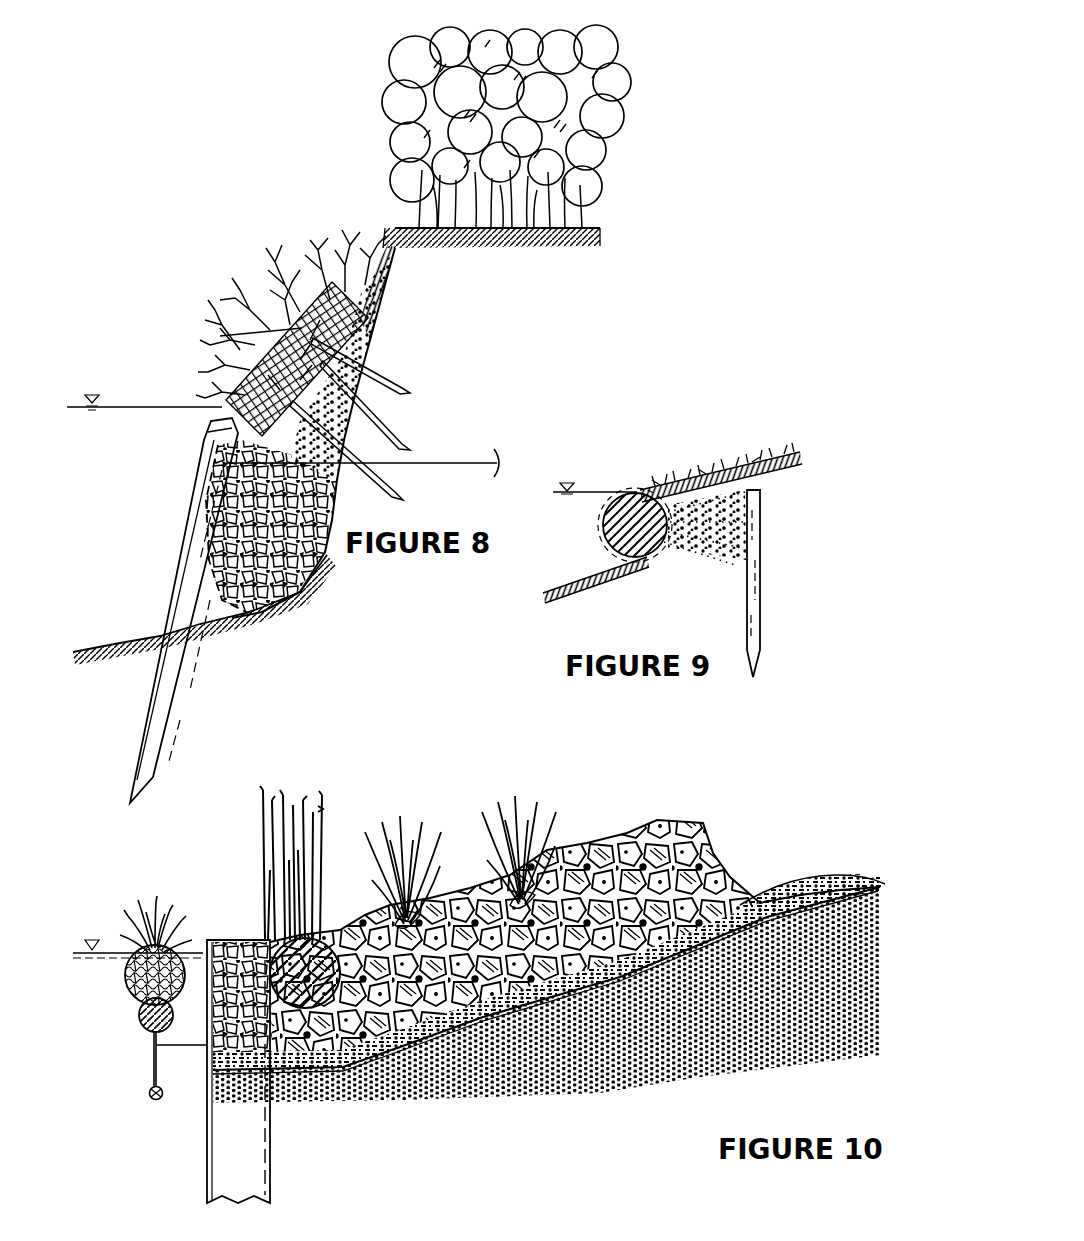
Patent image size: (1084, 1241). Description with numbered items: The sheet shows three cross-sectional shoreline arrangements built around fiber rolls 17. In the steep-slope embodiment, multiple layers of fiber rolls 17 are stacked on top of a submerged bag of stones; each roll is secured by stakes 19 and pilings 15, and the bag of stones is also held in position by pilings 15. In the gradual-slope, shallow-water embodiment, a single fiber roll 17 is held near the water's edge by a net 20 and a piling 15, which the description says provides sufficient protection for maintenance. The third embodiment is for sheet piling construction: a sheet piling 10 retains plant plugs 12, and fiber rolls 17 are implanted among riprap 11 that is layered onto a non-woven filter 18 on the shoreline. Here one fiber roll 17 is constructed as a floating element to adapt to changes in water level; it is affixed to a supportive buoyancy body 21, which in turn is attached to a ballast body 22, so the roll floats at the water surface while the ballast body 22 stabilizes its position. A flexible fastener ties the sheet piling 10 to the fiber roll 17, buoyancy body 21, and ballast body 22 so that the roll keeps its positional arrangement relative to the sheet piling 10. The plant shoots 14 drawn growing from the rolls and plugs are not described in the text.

In FIG. 10, the sheet piling 10 is at (210, 1158).
In FIG. 10, the riprap 11 is at (607, 850).
In FIG. 10, the plant plugs 12 is at (427, 843).
In FIG. 10, the vegetation / plant shoots 14 is at (283, 800).
In FIG. 8, the pilings 15 is at (193, 540).
In FIG. 9, the pilings 15 is at (752, 630).
In FIG. 8, the fiber roll 17 is at (294, 290).
In FIG. 9, the fiber roll 17 is at (637, 517).
In FIG. 10, the fiber roll 17 is at (318, 940).
In FIG. 10, the non-woven filter 18 is at (483, 1020).
In FIG. 8, the stakes 19 is at (404, 377).
In FIG. 9, the nets 20 is at (687, 537).
In FIG. 10, the buoyancy body 21 is at (139, 1015).
In FIG. 10, the ballast body 22 is at (150, 1092).